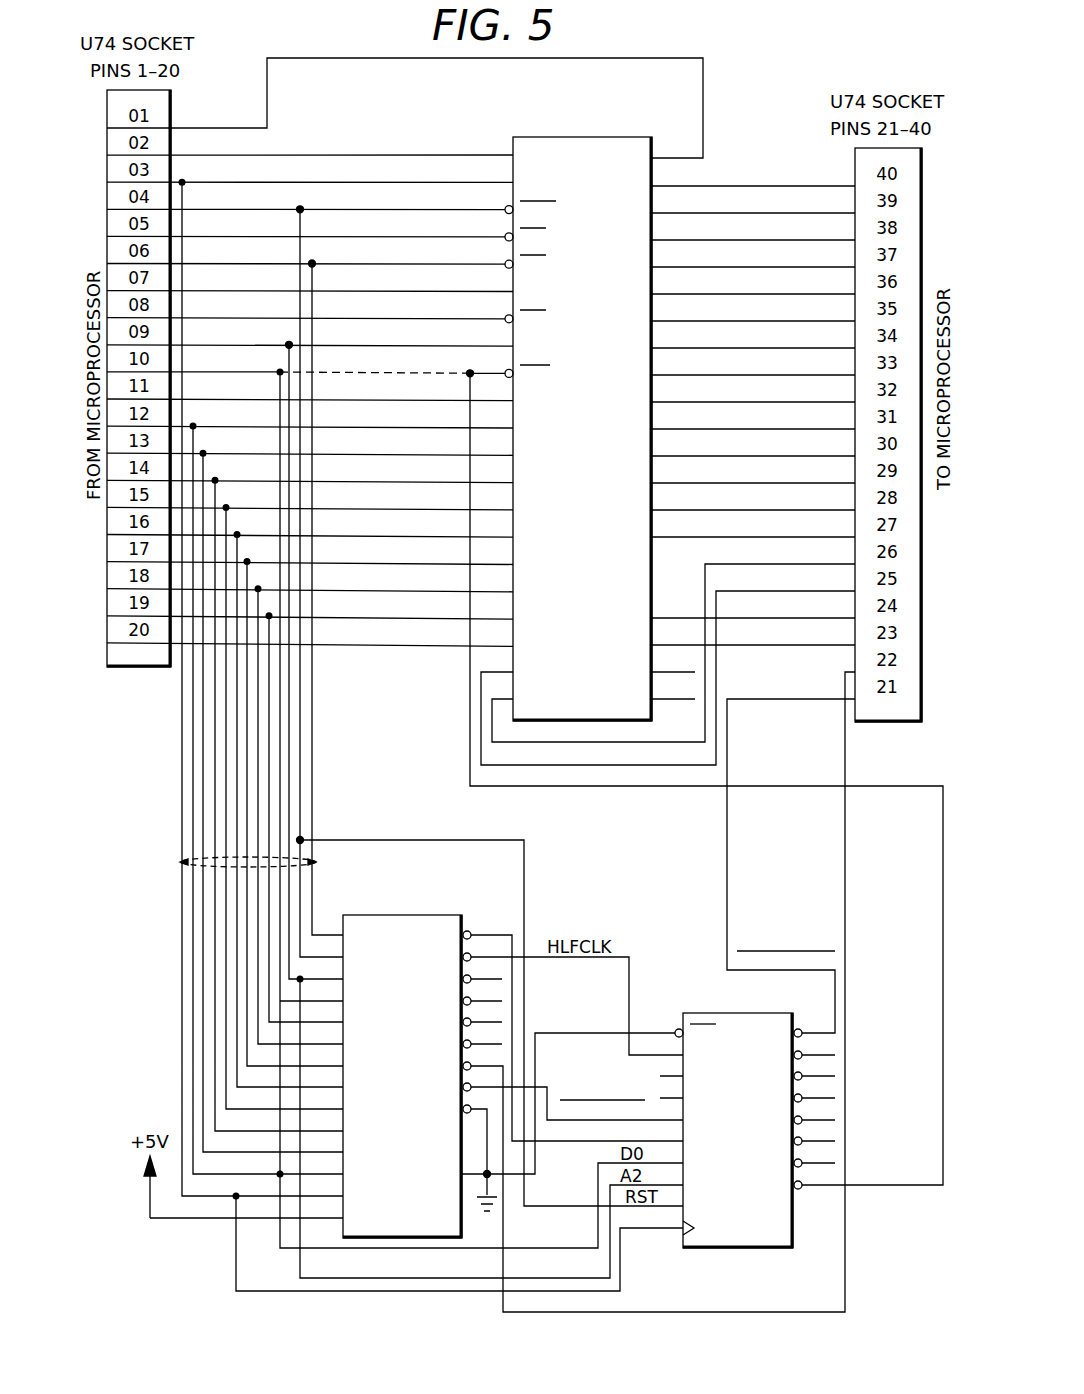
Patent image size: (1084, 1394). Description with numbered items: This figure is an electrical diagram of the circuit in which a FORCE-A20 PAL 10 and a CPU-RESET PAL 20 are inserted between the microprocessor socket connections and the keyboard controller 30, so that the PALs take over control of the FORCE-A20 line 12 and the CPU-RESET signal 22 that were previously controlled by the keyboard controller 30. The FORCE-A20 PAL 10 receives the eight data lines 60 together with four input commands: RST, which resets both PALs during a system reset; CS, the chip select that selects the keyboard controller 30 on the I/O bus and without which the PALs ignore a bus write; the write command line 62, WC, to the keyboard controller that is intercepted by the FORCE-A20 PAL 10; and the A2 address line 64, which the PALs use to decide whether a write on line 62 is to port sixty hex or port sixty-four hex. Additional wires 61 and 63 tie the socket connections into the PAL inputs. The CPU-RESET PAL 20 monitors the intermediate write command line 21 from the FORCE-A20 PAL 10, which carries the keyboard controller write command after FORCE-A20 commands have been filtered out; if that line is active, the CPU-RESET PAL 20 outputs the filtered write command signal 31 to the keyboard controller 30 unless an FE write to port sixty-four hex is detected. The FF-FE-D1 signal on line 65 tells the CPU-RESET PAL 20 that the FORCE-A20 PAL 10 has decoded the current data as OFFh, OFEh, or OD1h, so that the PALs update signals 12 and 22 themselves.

The FORCE-A20 PAL 10 is at (355, 915).
The FORCE-A20 line 12 is at (652, 1315).
The CPU-RESET PAL 20 is at (683, 1243).
The WC 8042I line 21 is at (580, 1143).
The CPU-RESET signal 22 is at (727, 870).
The 8042 keyboard controller 30 is at (540, 137).
The WC 8042 0 signal 31 is at (943, 1095).
The data lines 60 is at (180, 862).
The reset line 61 is at (302, 233).
The write command line 62 is at (386, 372).
The address line 63 is at (314, 803).
The address line A2 64 is at (258, 345).
The FF-FE-D1 signal line 65 is at (550, 1097).